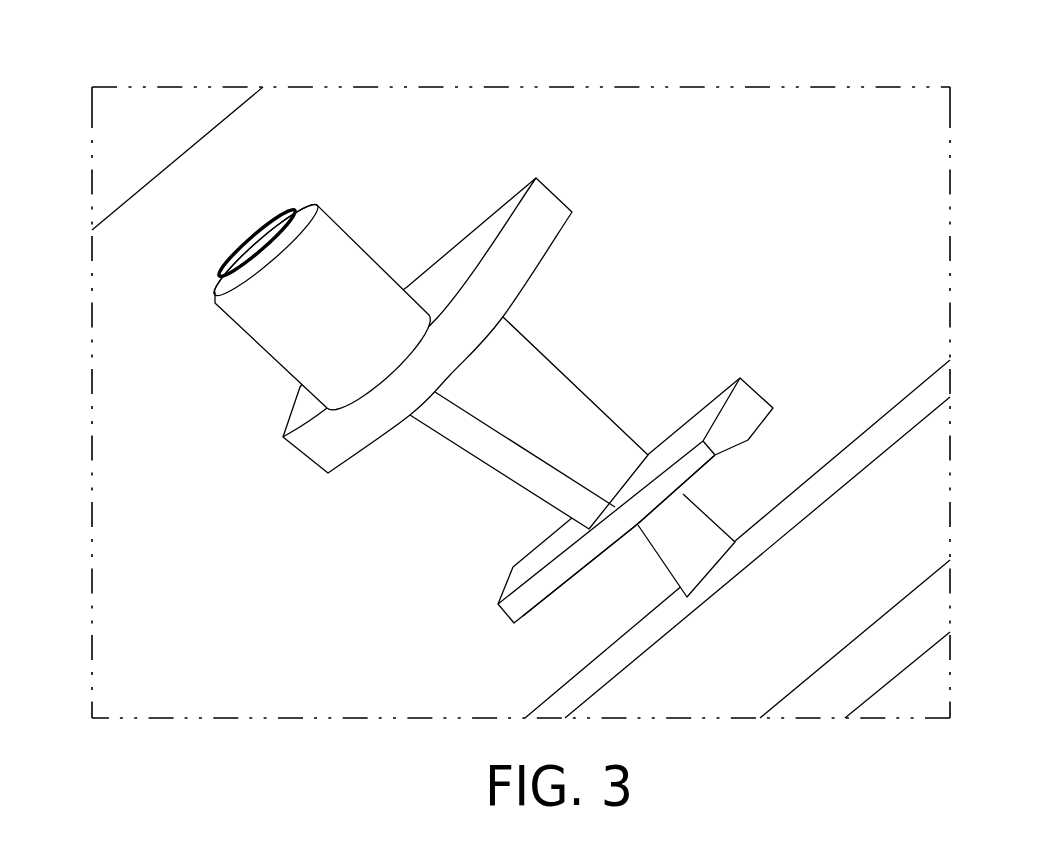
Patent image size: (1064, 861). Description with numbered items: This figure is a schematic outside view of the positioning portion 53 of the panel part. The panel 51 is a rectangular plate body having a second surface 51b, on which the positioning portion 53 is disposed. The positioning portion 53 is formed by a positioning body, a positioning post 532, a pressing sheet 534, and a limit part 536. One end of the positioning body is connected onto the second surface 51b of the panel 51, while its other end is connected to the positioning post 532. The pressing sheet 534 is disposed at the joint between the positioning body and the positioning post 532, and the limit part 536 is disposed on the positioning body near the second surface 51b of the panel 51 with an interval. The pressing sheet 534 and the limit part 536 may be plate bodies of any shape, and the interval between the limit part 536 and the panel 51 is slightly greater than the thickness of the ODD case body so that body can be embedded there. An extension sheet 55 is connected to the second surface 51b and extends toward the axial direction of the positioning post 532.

The extension sheet 55 is at (732, 120).
The panel 51 is at (918, 503).
The second surface 51b is at (937, 393).
The positioning portion 53 is at (497, 374).
The positioning post 532 is at (342, 255).
The pressing sheet 534 is at (543, 218).
The limit part 536 is at (742, 417).